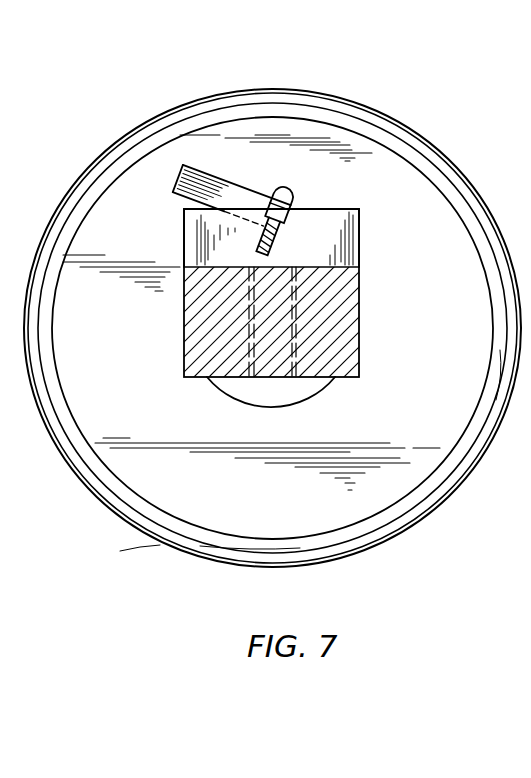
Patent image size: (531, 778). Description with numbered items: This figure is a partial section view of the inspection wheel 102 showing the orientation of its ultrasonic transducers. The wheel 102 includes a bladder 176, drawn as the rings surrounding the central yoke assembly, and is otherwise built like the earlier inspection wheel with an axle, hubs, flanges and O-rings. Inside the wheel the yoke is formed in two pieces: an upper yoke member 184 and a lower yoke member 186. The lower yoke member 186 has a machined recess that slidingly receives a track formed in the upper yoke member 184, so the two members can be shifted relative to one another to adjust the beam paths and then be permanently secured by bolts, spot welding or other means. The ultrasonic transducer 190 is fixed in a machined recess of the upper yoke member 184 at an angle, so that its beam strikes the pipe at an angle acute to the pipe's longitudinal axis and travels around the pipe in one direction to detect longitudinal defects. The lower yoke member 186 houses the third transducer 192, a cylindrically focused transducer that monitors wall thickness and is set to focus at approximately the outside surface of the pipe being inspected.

The wheel 102 is at (442, 132).
The bladder 176 is at (157, 542).
The upper yoke member 184 is at (349, 244).
The lower yoke member 186 is at (352, 358).
The ultrasonic transducer 190 is at (220, 185).
The third transducer 192 is at (307, 305).